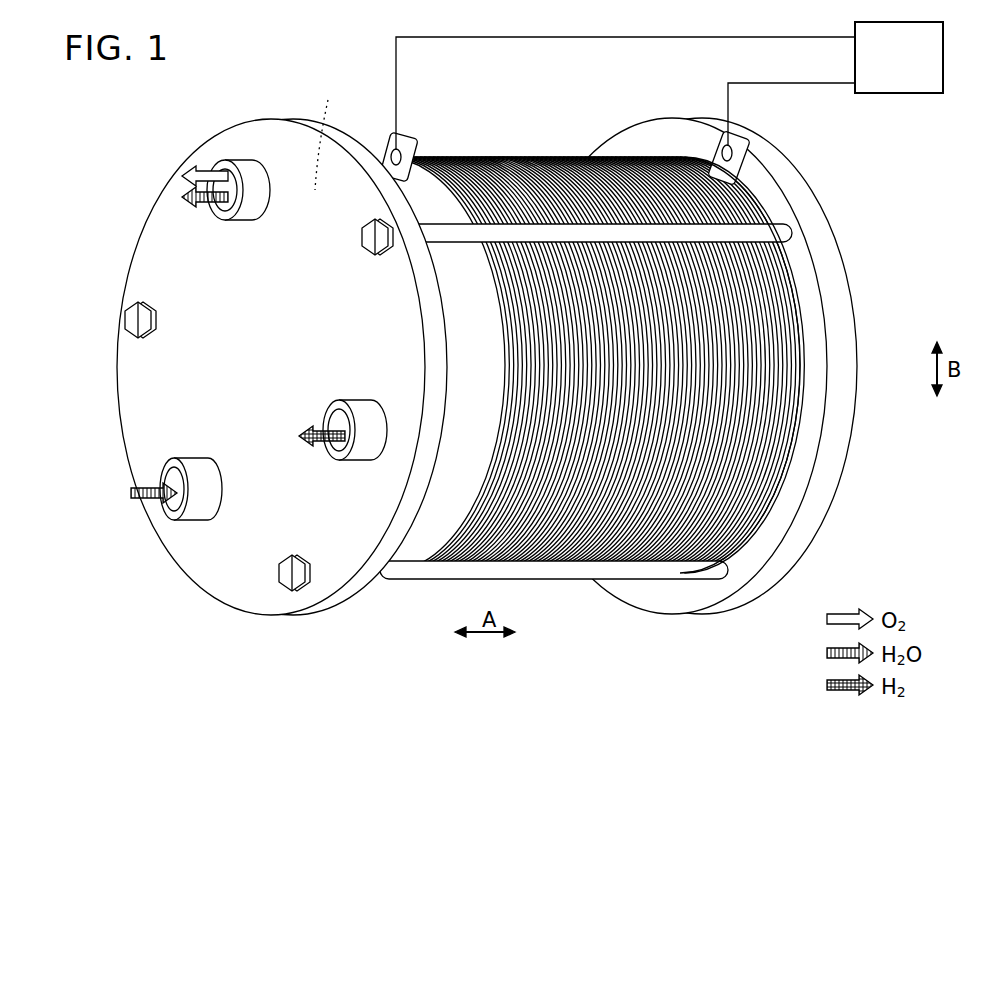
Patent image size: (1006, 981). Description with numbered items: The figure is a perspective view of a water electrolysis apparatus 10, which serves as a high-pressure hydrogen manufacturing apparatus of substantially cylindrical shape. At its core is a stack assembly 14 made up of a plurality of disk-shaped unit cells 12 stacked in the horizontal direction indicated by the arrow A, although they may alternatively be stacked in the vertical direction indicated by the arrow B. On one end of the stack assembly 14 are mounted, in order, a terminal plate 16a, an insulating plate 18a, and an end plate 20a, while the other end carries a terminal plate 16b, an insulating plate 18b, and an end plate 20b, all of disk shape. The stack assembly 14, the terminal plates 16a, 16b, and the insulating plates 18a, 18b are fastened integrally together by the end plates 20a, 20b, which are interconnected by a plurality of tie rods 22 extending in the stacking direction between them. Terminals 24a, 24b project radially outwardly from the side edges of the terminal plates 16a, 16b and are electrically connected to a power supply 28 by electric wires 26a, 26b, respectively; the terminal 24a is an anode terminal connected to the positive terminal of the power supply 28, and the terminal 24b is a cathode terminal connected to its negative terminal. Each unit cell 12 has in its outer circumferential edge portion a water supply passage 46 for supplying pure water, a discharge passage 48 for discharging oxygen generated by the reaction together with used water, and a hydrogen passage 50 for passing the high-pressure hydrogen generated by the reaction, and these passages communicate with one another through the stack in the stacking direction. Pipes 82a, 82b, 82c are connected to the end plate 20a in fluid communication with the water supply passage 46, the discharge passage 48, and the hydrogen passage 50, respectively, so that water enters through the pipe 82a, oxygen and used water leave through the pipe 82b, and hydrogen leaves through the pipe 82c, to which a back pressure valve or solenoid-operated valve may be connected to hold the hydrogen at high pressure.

The water electrolysis apparatus 10 is at (104, 138).
The unit cell 12 is at (519, 542).
The stack assembly 14 is at (532, 420).
The terminal plate 16a is at (330, 136).
The terminal plate 16b is at (790, 308).
The insulating plate 18a is at (330, 124).
The insulating plate 18b is at (799, 347).
The end plate 20a is at (132, 231).
The end plate 20b is at (616, 129).
The tie rod 22 is at (793, 231).
The terminal 24a is at (406, 149).
The terminal 24b is at (740, 152).
The electric wire 26a is at (650, 38).
The electric wire 26b is at (727, 104).
The power supply 28 is at (924, 94).
The water supply passage 46 is at (199, 466).
The discharge passage 48 is at (248, 212).
The hydrogen passage 50 is at (360, 404).
The pipe 82a is at (178, 455).
The pipe 82b is at (226, 232).
The pipe 82c is at (331, 404).